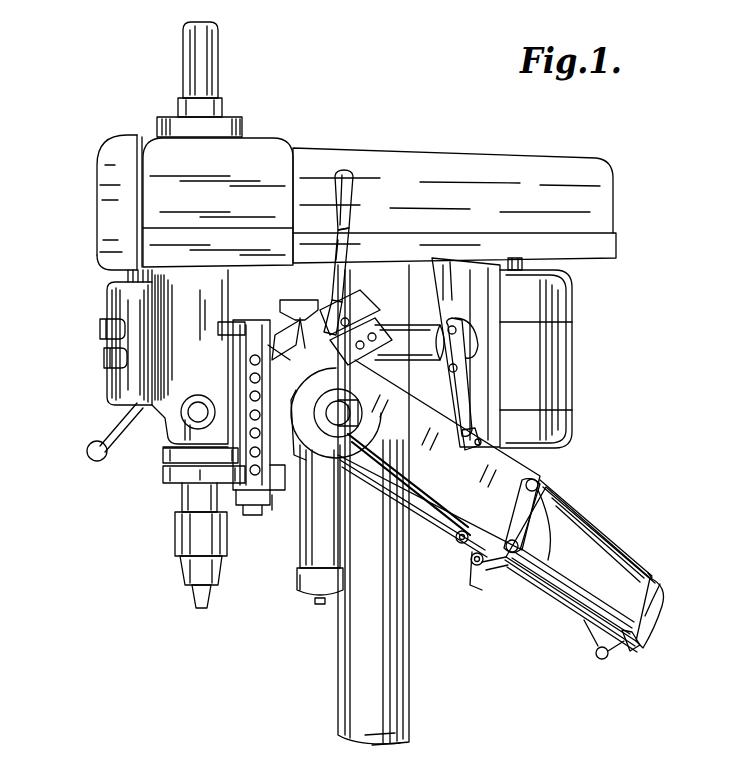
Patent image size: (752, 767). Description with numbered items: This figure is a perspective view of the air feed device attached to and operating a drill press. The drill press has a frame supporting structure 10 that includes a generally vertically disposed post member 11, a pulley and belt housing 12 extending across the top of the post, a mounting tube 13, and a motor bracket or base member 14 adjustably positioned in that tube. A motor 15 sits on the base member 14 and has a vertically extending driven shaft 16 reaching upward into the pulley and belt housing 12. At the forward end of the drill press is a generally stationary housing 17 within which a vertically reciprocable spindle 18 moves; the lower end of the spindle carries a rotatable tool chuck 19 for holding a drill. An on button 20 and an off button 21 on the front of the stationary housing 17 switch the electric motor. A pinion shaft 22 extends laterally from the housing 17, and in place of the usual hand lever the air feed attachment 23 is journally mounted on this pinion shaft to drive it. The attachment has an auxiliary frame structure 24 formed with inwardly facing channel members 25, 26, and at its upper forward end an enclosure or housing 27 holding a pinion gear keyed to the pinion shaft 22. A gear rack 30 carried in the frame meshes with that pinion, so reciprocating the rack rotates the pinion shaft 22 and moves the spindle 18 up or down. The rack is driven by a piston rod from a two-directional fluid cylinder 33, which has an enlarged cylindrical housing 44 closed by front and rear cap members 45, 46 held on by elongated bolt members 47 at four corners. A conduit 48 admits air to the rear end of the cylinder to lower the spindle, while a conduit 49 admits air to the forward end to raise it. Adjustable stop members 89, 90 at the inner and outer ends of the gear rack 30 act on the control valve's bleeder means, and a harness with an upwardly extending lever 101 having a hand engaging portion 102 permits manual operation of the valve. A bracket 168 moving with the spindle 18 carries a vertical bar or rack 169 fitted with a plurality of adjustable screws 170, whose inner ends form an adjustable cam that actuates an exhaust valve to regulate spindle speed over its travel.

The frame supporting structure 10 is at (331, 648).
The post member 11 is at (407, 658).
The pulley and belt housing 12 is at (384, 153).
The mounting tube 13 is at (440, 350).
The motor bracket or base member 14 is at (488, 365).
The motor 15 is at (574, 362).
The driven shaft 16 is at (515, 258).
The stationary housing 17 is at (170, 305).
The spindle 18 is at (177, 477).
The tool chuck 19 is at (195, 585).
The on button 20 is at (100, 330).
The off button 21 is at (104, 362).
The pinion shaft 22 is at (350, 432).
The air feed attachment 23 is at (455, 526).
The frame structure 24 is at (509, 490).
The channel member 25 is at (448, 510).
The channel member 26 is at (439, 455).
The enclosure or housing 27 is at (320, 458).
The gear rack 30 is at (338, 402).
The fluid cylinder 33 is at (647, 628).
The cylindrical housing 44 is at (620, 572).
The front cap member 45 is at (526, 560).
The rear cap member 46 is at (655, 605).
The elongated bolt member 47 is at (588, 524).
The conduit 48 is at (604, 659).
The conduit 49 is at (472, 578).
The adjustable stop member 89 is at (482, 432).
The adjustable stop member 90 is at (312, 300).
The lever 101 is at (345, 247).
The hand engaging portion 102 is at (355, 190).
The bracket 168 is at (248, 490).
The vertical bar or rack 169 is at (248, 330).
The adjustable screws 170 is at (250, 396).